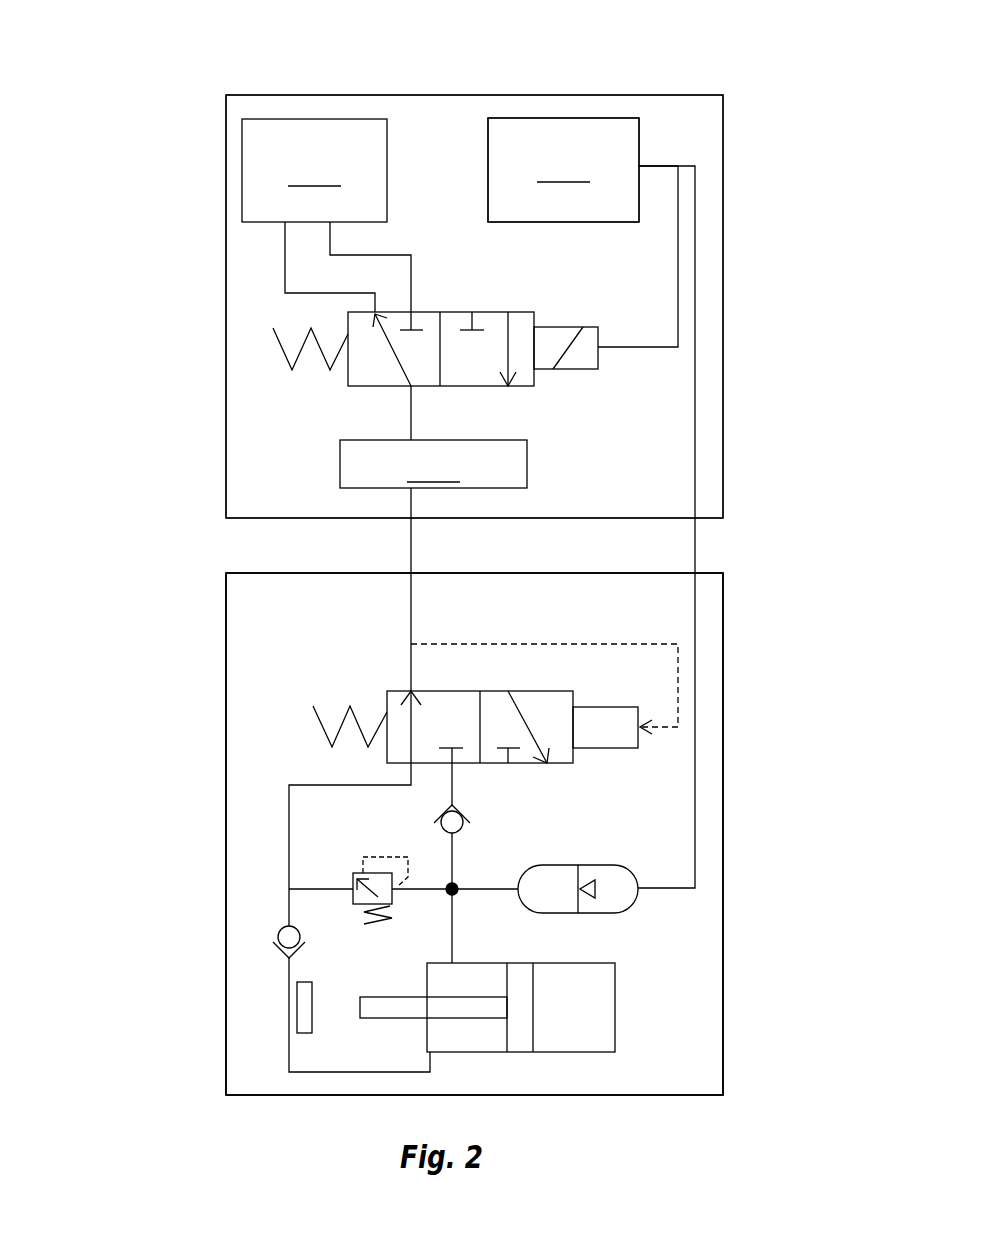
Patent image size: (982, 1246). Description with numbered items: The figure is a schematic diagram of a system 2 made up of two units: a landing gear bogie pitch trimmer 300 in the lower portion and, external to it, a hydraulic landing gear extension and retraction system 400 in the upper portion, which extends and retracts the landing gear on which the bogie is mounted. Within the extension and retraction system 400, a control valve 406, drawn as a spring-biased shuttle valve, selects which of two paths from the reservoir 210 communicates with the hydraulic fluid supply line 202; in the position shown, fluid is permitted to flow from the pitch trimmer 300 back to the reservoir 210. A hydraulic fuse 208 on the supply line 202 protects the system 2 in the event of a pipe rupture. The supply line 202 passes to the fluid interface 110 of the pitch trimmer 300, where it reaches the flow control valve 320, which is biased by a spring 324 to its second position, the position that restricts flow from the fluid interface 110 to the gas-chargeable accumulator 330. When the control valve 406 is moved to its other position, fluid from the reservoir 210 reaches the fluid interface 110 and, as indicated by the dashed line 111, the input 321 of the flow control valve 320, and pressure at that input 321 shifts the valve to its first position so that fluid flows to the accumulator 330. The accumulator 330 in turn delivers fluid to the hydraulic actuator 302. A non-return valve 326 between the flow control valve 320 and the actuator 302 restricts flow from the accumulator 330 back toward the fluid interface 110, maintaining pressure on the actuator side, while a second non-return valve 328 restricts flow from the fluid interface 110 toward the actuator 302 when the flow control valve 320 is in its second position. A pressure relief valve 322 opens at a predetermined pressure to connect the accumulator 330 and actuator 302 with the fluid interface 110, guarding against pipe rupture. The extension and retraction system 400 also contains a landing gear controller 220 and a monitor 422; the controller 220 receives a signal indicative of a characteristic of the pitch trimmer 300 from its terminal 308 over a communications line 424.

The system 2 is at (166, 97).
The hydraulic landing gear extension and retraction system 400 is at (101, 169).
The landing gear bogie pitch trimmer 300 is at (119, 629).
The reservoir 210 is at (314, 170).
The landing gear controller 220 is at (563, 170).
The hydraulic fuse 208 is at (433, 464).
The control valve 406 is at (535, 318).
The monitor 422 is at (640, 130).
The communications line 424 is at (695, 396).
The hydraulic fluid supply line 202 is at (411, 412).
The fluid interface 110 is at (411, 573).
The terminal 308 is at (695, 593).
The flow control valve 320 is at (573, 763).
The input 321 is at (638, 748).
The dashed line 111 is at (680, 697).
The spring 324 is at (330, 730).
The non-return valve 326 is at (470, 822).
The pressure relief valve 322 is at (353, 885).
The second non-return valve 328 is at (278, 936).
The hydraulic actuator 302 is at (427, 982).
The gas-chargeable accumulator 330 is at (640, 897).